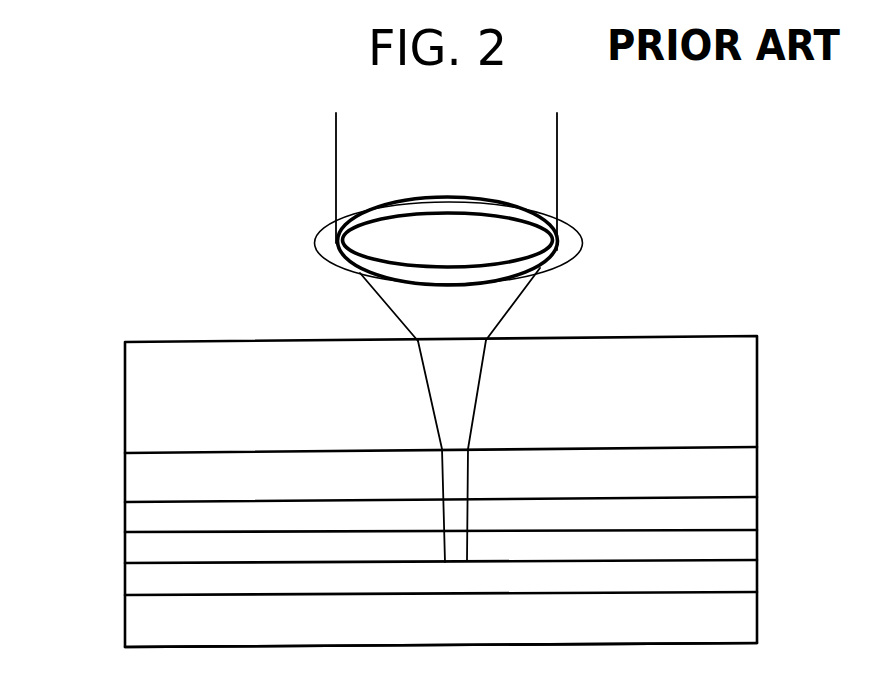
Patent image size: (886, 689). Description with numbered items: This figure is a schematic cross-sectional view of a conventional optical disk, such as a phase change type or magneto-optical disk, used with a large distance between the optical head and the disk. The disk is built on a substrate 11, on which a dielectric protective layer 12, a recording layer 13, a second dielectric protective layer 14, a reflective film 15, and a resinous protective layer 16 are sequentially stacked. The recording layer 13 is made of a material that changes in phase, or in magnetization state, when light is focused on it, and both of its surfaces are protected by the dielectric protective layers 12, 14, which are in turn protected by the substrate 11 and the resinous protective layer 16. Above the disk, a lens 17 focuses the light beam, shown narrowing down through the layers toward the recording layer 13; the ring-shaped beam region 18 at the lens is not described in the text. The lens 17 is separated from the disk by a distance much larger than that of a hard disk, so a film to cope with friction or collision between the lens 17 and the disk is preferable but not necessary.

The substrate 11 is at (140, 404).
The dielectric protective layer 12 is at (140, 479).
The recording layer 13 is at (140, 515).
The dielectric protective layer 14 is at (140, 547).
The reflective film 15 is at (140, 580).
The resinous protective layer 16 is at (140, 629).
The lens 17 is at (520, 242).
The laser beam spot 18 is at (353, 268).